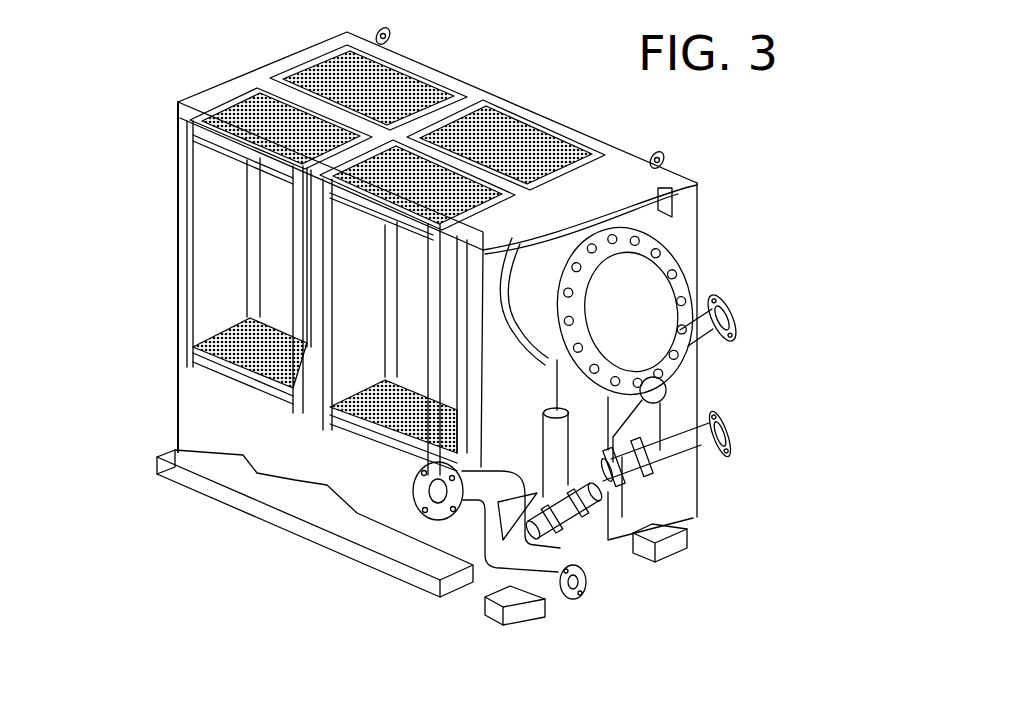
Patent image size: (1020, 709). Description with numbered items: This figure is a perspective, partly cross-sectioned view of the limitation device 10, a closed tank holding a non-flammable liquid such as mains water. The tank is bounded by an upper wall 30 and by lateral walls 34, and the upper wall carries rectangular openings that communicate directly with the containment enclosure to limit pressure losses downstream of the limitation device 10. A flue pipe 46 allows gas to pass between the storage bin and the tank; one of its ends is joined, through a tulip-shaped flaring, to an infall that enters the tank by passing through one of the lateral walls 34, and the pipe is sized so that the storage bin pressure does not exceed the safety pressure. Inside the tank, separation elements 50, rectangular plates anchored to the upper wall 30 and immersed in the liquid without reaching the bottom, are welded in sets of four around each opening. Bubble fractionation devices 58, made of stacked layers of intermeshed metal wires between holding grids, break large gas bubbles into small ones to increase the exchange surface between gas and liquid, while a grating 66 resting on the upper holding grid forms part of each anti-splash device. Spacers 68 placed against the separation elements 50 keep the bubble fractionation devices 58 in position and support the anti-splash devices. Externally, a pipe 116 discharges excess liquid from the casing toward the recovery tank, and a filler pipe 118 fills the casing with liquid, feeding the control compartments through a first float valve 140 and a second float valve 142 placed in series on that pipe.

The limitation device 10 is at (108, 116).
The upper wall 30 is at (625, 167).
The lateral walls 34 is at (180, 280).
The flue pipe 46 is at (542, 355).
The separation elements 50 is at (346, 382).
The bubble fractionation devices 58 is at (226, 340).
The grating 66 is at (510, 127).
The spacers 68 is at (190, 210).
The pipe for discharging excess liquid 116 is at (500, 562).
The filler pipe 118 is at (677, 452).
The first float valve 140 is at (572, 520).
The second float valve 142 is at (630, 470).